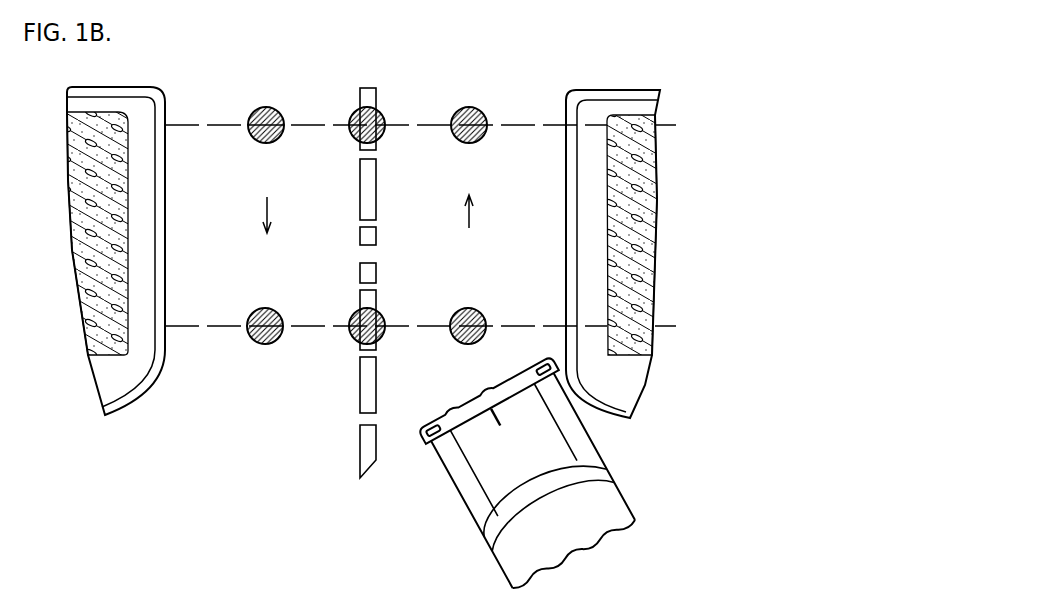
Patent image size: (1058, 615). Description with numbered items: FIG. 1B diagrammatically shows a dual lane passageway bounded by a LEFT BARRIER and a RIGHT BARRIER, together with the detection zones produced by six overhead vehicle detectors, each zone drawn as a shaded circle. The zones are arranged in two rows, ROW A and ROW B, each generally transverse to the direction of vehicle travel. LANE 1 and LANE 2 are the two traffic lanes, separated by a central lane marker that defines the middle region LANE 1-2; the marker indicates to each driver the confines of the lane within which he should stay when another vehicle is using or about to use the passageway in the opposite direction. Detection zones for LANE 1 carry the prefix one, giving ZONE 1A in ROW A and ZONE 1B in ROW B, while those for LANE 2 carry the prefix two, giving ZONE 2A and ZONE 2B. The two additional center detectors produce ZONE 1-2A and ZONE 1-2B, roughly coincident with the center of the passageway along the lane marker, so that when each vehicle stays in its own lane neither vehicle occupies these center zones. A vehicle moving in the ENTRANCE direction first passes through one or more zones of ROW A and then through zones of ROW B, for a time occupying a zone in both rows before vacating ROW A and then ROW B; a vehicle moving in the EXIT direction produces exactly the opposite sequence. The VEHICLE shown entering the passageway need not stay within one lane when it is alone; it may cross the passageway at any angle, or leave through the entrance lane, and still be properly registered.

The detection zone 1A ZONE 1A is at (270, 97).
The detection zone 1-2A ZONE 1-2A is at (357, 108).
The detection zone 2A ZONE 2A is at (478, 97).
The detection zone 1B ZONE 1B is at (265, 343).
The detection zone 1-2B ZONE 1-2B is at (379, 338).
The detection zone 2B ZONE 2B is at (501, 349).
The row A ROW A is at (452, 125).
The row B ROW B is at (452, 328).
The lane 1 LANE 1 is at (252, 291).
The lane 2 LANE 2 is at (471, 291).
The center lane zone 1-2 LANE 1-2 is at (366, 256).
The entering direction ENTRANCE is at (270, 203).
The exiting direction EXIT is at (473, 223).
The vehicle VEHICLE is at (529, 473).
The left roadside barrier LEFT BARRIER is at (116, 251).
The right roadside barrier RIGHT BARRIER is at (613, 254).